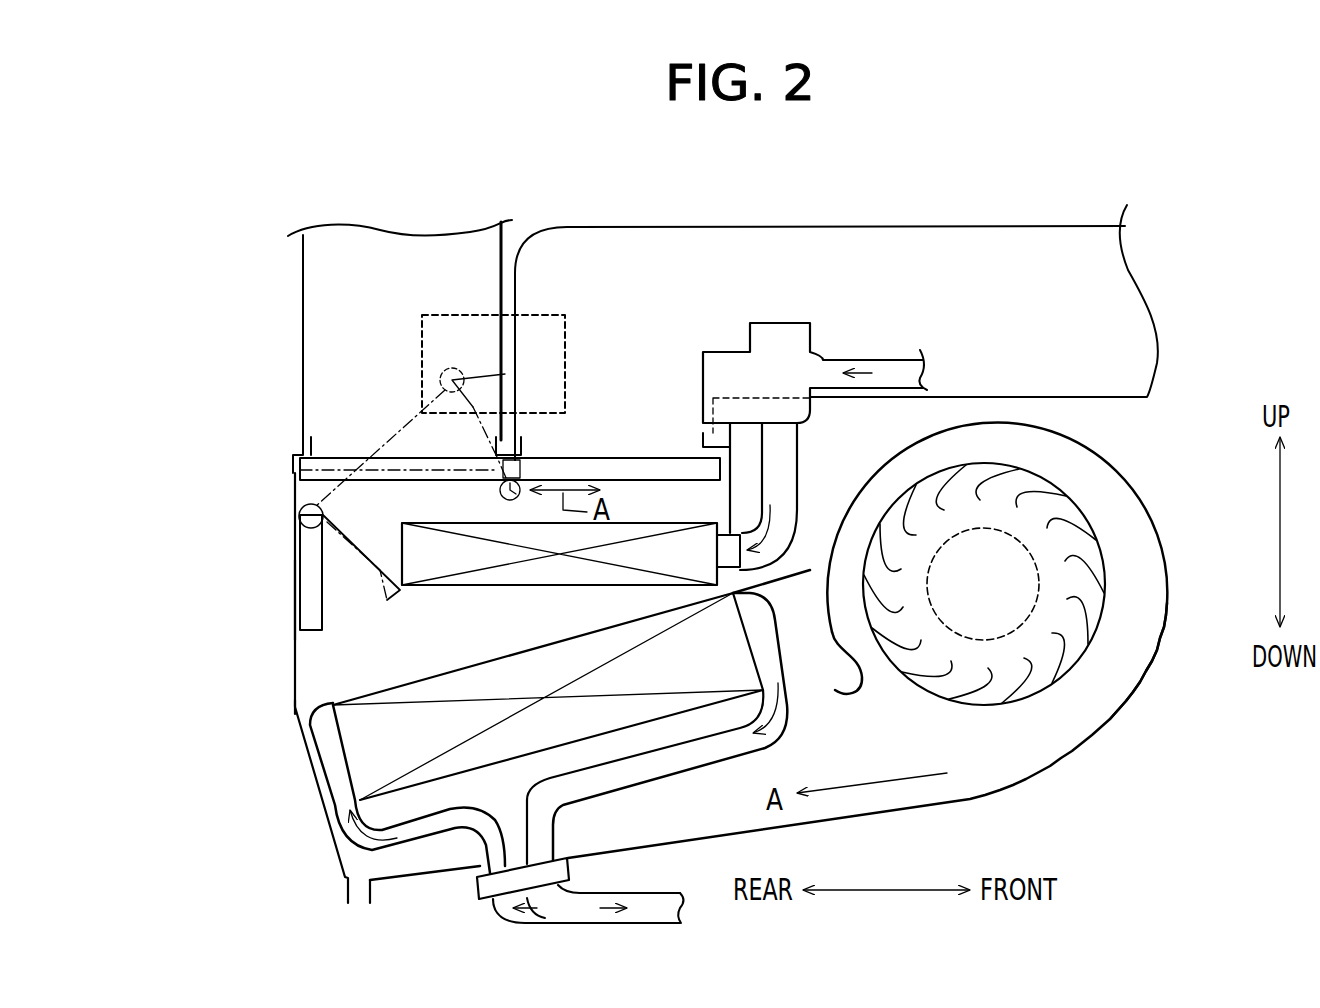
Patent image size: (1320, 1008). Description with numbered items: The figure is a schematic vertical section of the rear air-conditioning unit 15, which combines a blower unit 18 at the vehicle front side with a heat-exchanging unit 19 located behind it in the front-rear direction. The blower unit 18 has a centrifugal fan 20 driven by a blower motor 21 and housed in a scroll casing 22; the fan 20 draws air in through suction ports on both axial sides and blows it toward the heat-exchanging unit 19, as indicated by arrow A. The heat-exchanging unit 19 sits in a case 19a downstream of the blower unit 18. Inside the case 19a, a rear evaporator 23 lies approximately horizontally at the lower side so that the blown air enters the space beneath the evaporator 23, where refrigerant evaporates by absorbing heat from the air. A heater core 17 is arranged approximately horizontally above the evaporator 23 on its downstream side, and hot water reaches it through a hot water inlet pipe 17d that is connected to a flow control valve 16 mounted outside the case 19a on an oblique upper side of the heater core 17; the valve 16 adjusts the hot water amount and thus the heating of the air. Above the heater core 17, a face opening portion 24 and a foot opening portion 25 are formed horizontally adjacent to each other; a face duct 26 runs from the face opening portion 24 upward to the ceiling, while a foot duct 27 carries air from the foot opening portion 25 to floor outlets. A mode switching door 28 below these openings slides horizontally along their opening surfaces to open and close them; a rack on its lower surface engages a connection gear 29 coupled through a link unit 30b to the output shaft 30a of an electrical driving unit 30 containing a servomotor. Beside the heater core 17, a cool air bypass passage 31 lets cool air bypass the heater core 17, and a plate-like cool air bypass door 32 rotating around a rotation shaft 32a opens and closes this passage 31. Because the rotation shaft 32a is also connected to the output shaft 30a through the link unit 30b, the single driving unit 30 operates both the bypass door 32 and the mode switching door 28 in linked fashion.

The rear air-conditioning unit 15 is at (282, 598).
The flow control valve 16 is at (773, 357).
The heater core 17 is at (643, 553).
The hot water inlet pipe 17d is at (800, 467).
The blower unit 18 is at (1148, 685).
The heat-exchanging unit 19 is at (285, 695).
The case 19a is at (295, 707).
The centrifugal fan 20 is at (1100, 515).
The blower motor 21 is at (992, 528).
The scroll casing 22 is at (1123, 717).
The rear evaporator 23 is at (363, 753).
The face opening portion 24 is at (347, 443).
The foot opening portion 25 is at (582, 447).
The face duct 26 is at (303, 300).
The foot duct 27 is at (847, 224).
The mode switching door 28 is at (617, 457).
The connection gear 29 is at (500, 488).
The electrical driving unit 30 is at (440, 314).
The output shaft 30a is at (462, 376).
The link unit 30b is at (423, 408).
The cool air bypass passage 31 is at (390, 547).
The cool air bypass door 32 is at (310, 563).
The rotation shaft 32a is at (298, 518).